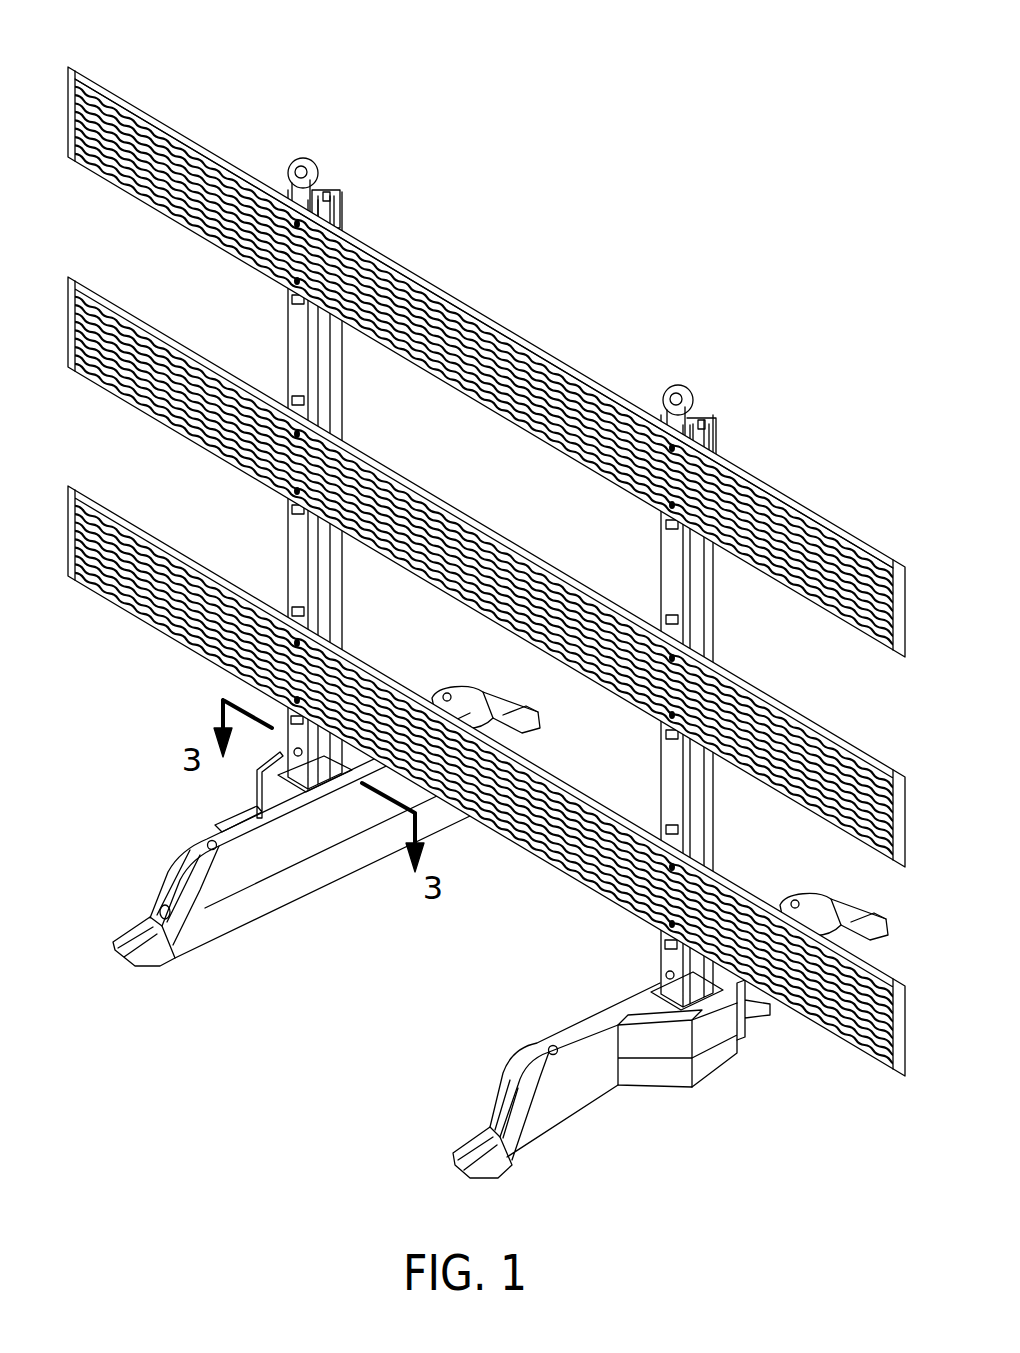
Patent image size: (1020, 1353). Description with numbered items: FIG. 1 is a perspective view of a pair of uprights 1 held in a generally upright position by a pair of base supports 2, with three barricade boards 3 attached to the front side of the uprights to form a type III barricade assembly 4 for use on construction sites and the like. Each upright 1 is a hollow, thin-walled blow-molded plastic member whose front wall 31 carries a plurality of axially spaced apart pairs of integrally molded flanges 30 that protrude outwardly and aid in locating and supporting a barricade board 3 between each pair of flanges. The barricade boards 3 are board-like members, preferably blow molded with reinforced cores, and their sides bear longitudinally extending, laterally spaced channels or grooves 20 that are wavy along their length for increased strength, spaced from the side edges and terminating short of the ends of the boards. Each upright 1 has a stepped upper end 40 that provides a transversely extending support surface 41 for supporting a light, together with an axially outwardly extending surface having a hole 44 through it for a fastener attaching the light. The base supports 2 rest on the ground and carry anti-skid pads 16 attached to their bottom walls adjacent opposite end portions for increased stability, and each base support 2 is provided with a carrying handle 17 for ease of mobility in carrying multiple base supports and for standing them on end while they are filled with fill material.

The upright 1 is at (442, 548).
The base support 2 is at (446, 968).
The barricade board 3 is at (174, 128).
The type III barricade assembly 4 is at (544, 257).
The anti-skid pad 16 is at (169, 964).
The carrying handle 17 is at (227, 805).
The channels or grooves 20 is at (586, 378).
The flanges 30 is at (291, 173).
The front wall 31 is at (297, 357).
The upper end 40 is at (345, 197).
The support surface 41 is at (328, 181).
The hole 44 is at (294, 162).